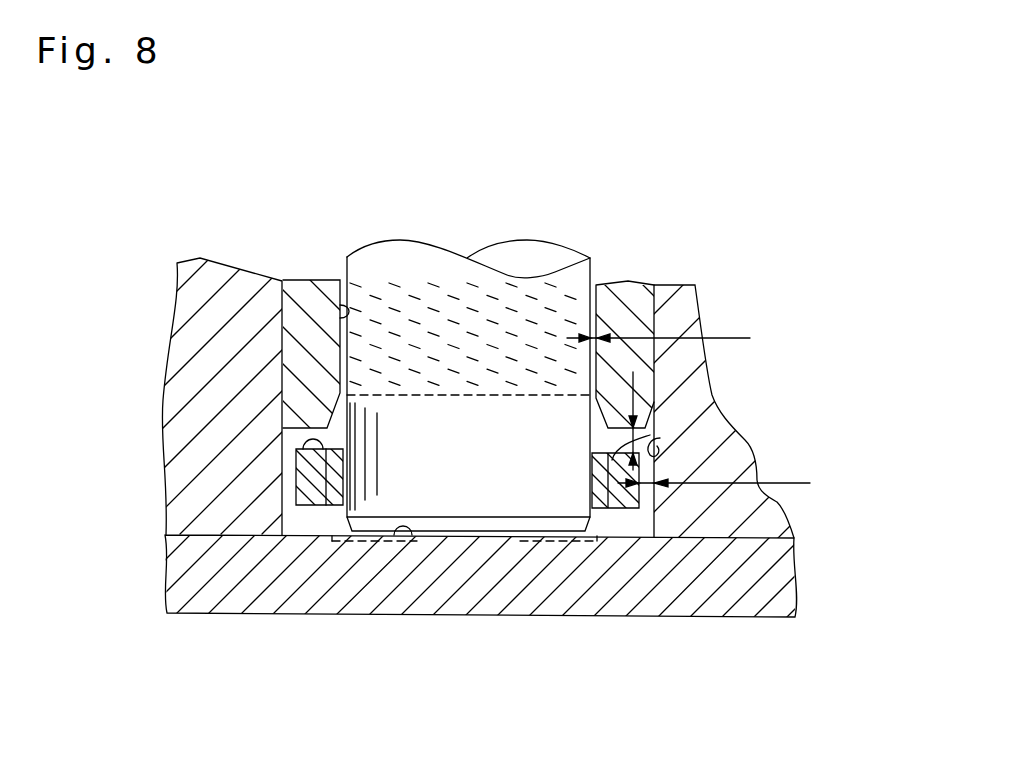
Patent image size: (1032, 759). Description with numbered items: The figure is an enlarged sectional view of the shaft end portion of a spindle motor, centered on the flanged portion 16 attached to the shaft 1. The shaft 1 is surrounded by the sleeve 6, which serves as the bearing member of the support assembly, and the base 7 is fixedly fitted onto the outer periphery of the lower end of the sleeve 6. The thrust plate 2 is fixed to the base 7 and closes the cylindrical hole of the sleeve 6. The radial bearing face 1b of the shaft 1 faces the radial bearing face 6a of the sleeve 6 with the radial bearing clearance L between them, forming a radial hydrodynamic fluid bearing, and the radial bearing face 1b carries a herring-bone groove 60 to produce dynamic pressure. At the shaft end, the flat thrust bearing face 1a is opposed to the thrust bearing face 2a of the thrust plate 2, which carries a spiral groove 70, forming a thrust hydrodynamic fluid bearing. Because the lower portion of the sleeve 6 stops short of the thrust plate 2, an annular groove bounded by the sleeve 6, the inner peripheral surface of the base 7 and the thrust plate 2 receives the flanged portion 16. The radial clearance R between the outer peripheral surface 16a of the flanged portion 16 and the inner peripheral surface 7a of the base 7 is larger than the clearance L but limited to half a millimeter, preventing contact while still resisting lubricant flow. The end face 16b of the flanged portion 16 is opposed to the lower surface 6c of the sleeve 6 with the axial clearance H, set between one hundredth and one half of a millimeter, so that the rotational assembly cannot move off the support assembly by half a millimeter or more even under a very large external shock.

The shaft 1 is at (508, 295).
The flat thrust bearing face 1a is at (565, 534).
The cylindrical radial bearing face 1b is at (347, 380).
The thrust plate 2 is at (458, 607).
The thrust bearing face 2a is at (397, 534).
The sleeve 6 is at (305, 312).
The radial bearing face 6a is at (342, 313).
The lower surface of the sleeve 6c is at (654, 408).
The base 7 is at (668, 292).
The inner peripheral surface of the base 7a is at (660, 438).
The flanged portion 16 is at (297, 505).
The outer peripheral surface of the flanged portion 16a is at (296, 463).
The end face of the flanged portion 16b is at (325, 505).
The herring-bone groove 60 is at (588, 276).
The spiral groove 70 is at (560, 540).
The radial bearing clearance L is at (667, 326).
The radial clearance R is at (714, 471).
The axial clearance H is at (612, 460).